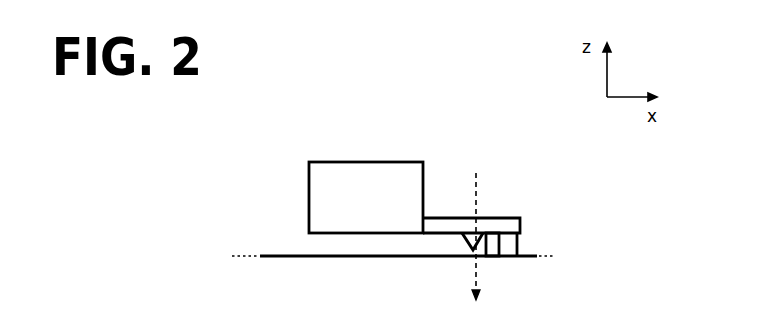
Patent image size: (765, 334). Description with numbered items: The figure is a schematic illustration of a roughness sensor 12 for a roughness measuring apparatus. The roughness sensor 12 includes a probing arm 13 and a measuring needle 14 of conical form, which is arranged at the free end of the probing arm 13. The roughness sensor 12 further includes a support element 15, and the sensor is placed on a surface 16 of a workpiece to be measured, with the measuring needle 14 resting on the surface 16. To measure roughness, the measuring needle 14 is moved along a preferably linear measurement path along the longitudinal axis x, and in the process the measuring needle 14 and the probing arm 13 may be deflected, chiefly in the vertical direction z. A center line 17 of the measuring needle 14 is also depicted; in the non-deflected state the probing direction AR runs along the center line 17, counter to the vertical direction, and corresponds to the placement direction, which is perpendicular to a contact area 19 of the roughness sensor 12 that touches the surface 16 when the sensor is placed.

The roughness sensor 12 is at (358, 162).
The probing arm 13 is at (449, 216).
The measuring needle 14 is at (468, 245).
The support element 15 is at (520, 232).
The surface 16 is at (289, 256).
The center line 17 is at (477, 193).
The contact area 19 is at (505, 257).